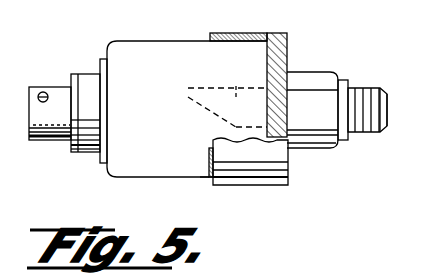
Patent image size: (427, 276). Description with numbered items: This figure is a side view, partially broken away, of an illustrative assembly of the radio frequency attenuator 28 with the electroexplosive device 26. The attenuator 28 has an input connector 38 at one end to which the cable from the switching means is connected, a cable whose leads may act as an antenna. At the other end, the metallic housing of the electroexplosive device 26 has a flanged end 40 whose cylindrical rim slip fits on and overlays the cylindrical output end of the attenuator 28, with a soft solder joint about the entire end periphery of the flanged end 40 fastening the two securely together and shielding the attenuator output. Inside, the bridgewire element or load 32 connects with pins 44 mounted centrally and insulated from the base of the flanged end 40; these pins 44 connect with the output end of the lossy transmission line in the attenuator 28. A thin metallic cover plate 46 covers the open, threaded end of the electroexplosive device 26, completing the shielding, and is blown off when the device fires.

The electroexplosive device 26 is at (356, 133).
The attenuator 28 is at (143, 40).
The bridgewire element 32 is at (306, 72).
The input connector 38 is at (55, 87).
The flanged end 40 is at (265, 39).
The pins 44 is at (210, 104).
The cover plate 46 is at (385, 102).